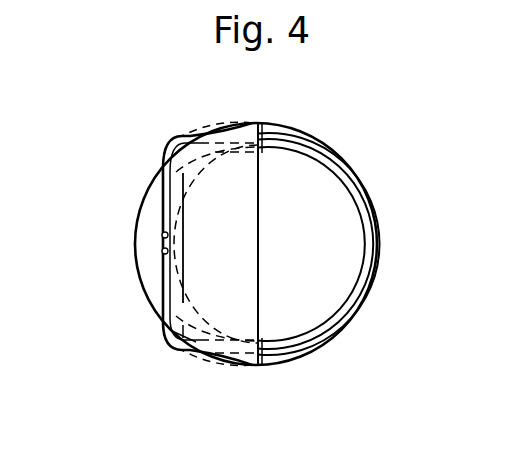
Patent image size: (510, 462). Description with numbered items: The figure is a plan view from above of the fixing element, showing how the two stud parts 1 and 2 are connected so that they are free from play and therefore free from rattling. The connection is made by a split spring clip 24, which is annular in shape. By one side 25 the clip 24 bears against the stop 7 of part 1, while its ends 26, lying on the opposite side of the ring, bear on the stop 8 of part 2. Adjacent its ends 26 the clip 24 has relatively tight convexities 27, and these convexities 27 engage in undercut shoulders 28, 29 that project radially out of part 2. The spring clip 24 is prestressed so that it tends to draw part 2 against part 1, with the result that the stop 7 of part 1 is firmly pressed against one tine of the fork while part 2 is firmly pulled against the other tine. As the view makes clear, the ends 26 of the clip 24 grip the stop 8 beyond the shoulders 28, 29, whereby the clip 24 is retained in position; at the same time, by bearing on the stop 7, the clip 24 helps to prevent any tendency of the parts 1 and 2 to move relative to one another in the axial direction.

The stud part 1 is at (385, 167).
The stud part 2 is at (152, 163).
The stop 7 is at (365, 212).
The stop 8 is at (152, 222).
The split spring clip 24 is at (332, 157).
The side 25 is at (362, 245).
The ends 26 is at (161, 236).
The convexities 27 is at (250, 123).
The undercut shoulder 28 is at (238, 358).
The undercut shoulder 29 is at (228, 130).